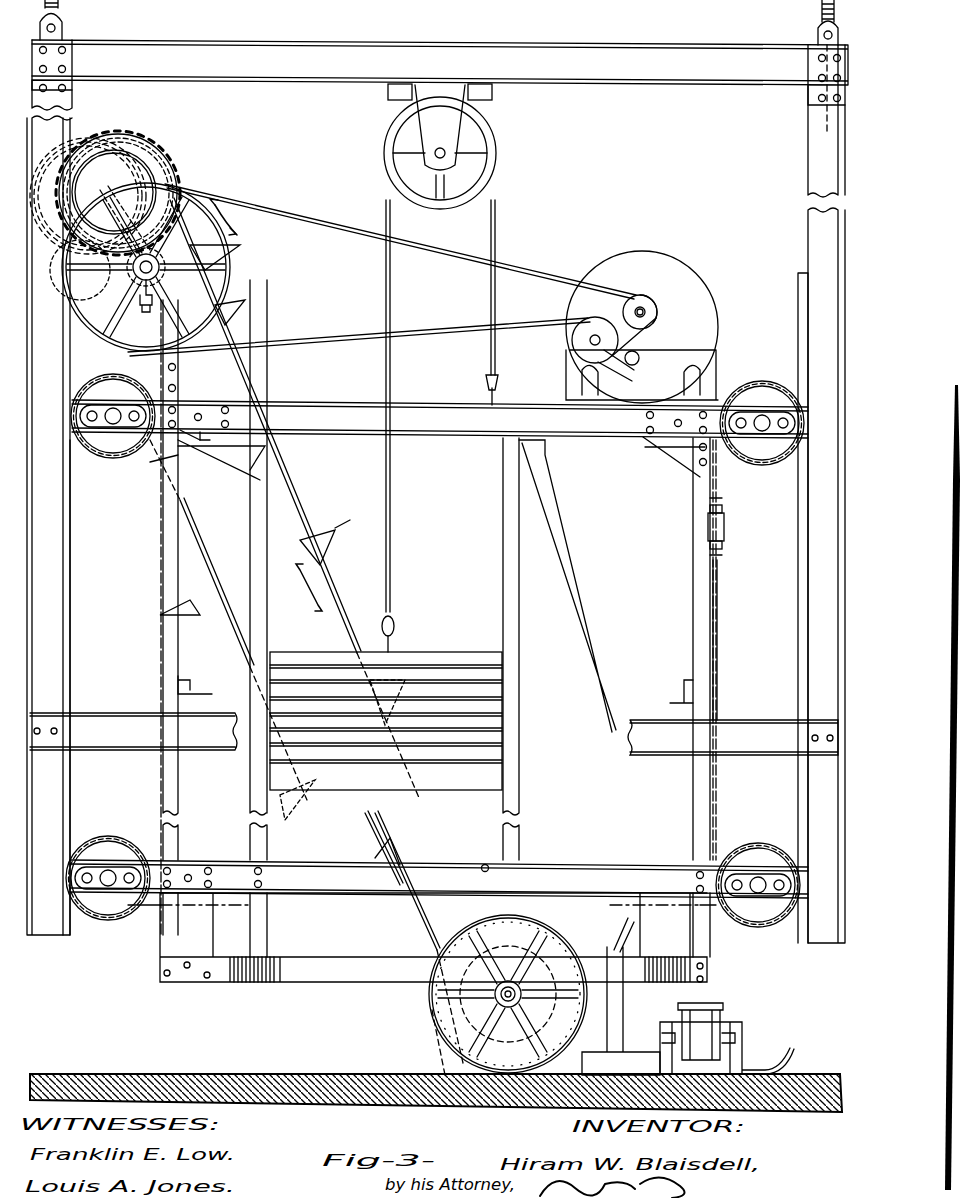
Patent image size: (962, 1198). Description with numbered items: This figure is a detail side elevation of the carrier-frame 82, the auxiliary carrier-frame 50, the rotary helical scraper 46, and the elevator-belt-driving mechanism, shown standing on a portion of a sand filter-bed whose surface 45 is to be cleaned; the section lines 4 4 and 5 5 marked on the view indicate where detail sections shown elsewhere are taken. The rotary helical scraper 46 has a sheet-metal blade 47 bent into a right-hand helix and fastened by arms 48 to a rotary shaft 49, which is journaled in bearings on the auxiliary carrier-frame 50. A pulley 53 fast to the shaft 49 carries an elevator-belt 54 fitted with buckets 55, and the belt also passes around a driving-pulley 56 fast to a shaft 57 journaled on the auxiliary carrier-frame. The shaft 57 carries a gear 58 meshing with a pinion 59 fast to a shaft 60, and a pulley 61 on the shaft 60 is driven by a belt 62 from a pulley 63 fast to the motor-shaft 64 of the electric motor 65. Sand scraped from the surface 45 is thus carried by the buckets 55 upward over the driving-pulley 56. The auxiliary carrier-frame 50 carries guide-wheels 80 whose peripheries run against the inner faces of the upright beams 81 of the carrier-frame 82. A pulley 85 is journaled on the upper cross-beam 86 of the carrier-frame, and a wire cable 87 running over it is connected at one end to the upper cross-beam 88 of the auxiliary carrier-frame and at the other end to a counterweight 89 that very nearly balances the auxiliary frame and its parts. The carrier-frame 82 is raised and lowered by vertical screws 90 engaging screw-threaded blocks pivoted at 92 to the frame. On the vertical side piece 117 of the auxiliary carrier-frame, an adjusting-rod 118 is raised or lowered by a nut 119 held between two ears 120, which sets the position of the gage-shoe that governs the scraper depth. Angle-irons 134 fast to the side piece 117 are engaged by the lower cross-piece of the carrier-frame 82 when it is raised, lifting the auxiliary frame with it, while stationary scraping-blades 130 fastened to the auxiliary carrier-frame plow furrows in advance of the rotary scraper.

The section line 4 is at (425, 914).
The section line 5 is at (815, 77).
The surface of the filter-bed 45 is at (262, 1074).
The rotary helical scraper 46 is at (462, 995).
The sheet-metal blade 47 is at (442, 1024).
The arms 48 is at (478, 935).
The rotary shaft 49 is at (495, 987).
The auxiliary carrier-frame 50 is at (270, 998).
The pulley 53 is at (450, 1048).
The elevator-belt 54 is at (352, 588).
The buckets 55 is at (372, 845).
The driving-pulley 56 is at (158, 155).
The shaft 57 is at (114, 202).
The gear 58 is at (133, 140).
The pinion 59 is at (122, 282).
The shaft 60 is at (160, 267).
The pulley 61 is at (231, 290).
The belt 62 is at (338, 228).
The pulley 63 is at (650, 308).
The motor-shaft 64 is at (642, 310).
The electric motor 65 is at (706, 324).
The guide-wheels 80 is at (762, 937).
The upright beams 81 is at (820, 800).
The carrier-frame 82 is at (434, 423).
The pulley 85 is at (497, 140).
The upper cross-beam 86 is at (588, 78).
The wire cable 87 is at (405, 540).
The upper cross-beam 88 is at (452, 436).
The counterweight 89 is at (422, 688).
The vertical screws 90 is at (812, 22).
The pivot 92 is at (820, 40).
The vertical side piece 117 is at (732, 612).
The adjusting-rod 118 is at (717, 680).
The nut 119 is at (724, 527).
The ears 120 is at (736, 556).
The stationary scraping-blades 130 is at (632, 1055).
The angle-irons 134 is at (672, 690).